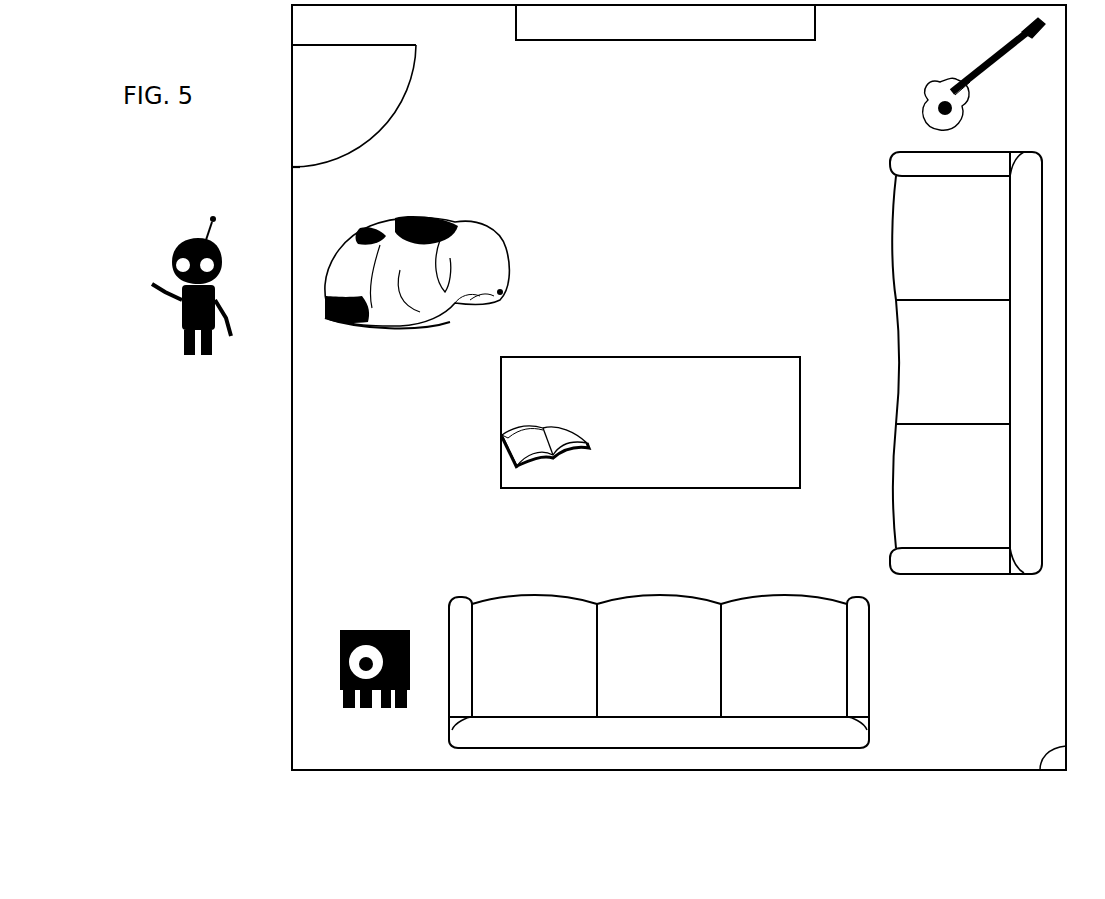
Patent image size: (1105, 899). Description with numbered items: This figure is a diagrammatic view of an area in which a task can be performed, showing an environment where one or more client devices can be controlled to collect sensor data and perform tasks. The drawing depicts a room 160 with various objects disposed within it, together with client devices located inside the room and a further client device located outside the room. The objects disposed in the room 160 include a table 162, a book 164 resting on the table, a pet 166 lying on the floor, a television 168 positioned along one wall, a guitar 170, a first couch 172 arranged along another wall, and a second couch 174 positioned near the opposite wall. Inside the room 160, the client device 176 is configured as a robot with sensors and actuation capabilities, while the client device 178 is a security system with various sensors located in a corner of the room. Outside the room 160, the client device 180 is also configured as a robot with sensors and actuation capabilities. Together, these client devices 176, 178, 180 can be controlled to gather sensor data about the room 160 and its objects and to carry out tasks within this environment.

The room 160 is at (292, 491).
The table 162 is at (501, 394).
The book 164 is at (510, 456).
The pet 166 is at (452, 222).
The television 168 is at (516, 40).
The guitar 170 is at (926, 108).
The first couch 172 is at (893, 333).
The second couch 174 is at (705, 600).
The client device 176 is at (372, 628).
The client device 178 is at (1044, 752).
The client device 180 is at (172, 265).